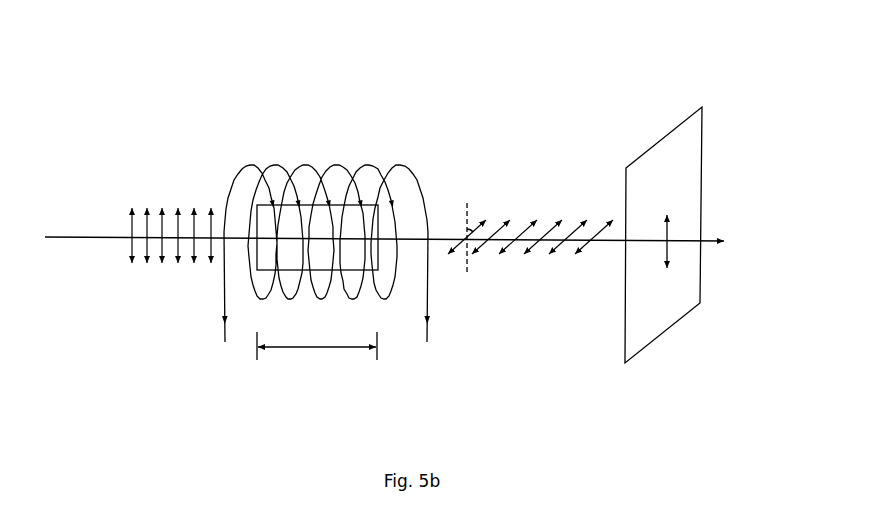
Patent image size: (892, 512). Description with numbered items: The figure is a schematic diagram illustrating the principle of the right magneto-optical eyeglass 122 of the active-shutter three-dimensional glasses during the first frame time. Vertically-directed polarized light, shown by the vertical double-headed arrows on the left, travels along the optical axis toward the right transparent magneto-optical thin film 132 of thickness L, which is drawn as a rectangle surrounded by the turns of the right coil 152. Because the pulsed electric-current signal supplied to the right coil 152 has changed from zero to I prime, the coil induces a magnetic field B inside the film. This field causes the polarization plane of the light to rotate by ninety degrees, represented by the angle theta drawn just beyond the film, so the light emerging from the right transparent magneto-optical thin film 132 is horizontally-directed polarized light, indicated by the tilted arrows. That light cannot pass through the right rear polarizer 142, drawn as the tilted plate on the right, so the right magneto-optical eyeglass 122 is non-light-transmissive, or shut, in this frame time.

The right magneto-optical eyeglass 122 is at (742, 163).
The right transparent magneto-optical thin film 132 is at (318, 218).
The right rear polarizer 142 is at (667, 177).
The right coil 152 is at (385, 177).